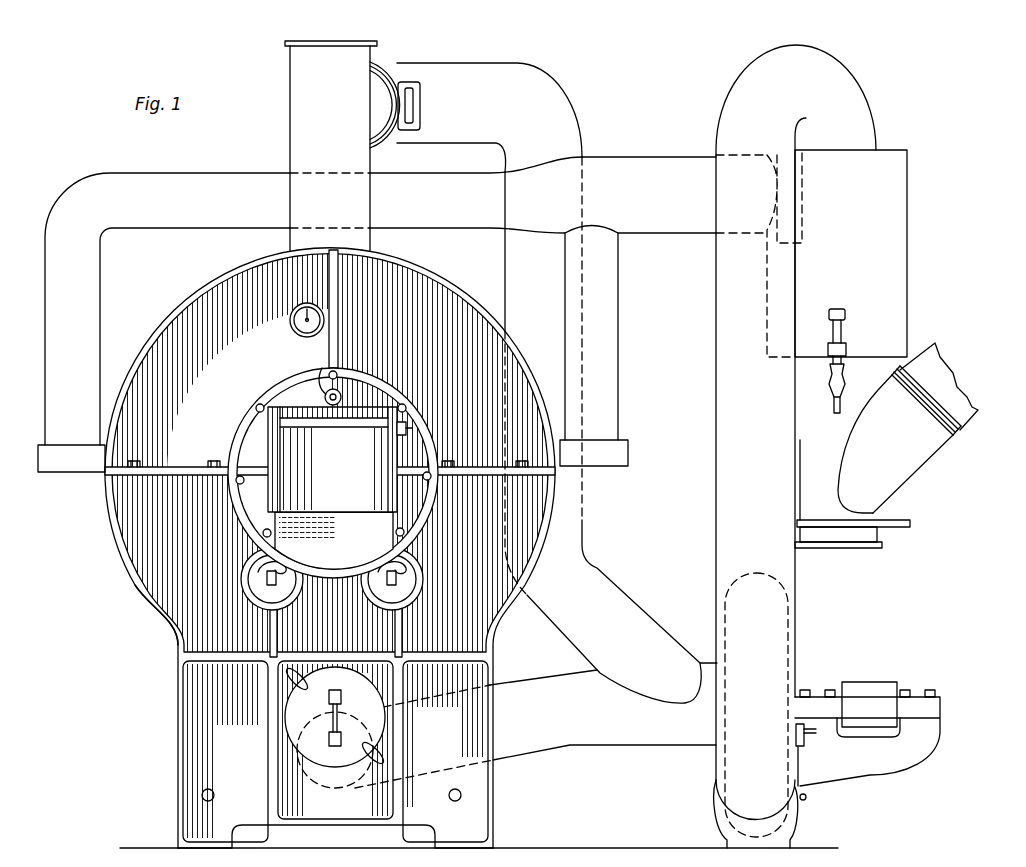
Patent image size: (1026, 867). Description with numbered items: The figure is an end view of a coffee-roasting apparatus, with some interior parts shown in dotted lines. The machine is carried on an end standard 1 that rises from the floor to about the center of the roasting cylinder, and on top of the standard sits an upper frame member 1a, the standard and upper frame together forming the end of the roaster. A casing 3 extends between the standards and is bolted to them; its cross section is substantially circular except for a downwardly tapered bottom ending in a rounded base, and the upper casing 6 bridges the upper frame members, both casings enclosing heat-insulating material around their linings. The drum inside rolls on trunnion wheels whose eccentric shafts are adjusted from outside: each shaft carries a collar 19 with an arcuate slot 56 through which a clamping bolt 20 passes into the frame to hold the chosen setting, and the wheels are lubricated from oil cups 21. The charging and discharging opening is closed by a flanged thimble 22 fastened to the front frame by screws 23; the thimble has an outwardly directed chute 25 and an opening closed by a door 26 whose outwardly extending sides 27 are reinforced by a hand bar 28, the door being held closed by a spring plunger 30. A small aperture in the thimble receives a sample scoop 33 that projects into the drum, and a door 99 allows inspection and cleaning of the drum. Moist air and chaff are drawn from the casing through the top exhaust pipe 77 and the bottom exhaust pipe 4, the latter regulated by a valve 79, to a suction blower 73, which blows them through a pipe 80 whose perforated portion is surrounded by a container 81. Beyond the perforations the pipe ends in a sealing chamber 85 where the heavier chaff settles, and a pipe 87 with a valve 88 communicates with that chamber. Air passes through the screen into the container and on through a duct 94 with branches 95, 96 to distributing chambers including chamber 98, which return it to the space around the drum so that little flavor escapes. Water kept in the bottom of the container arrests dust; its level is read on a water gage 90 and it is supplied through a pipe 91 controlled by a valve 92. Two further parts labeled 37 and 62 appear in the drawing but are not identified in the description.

The end standard 1 is at (184, 737).
The upper frame member 1a is at (330, 472).
The casing 3 is at (158, 606).
The exhaust pipe 4 is at (517, 684).
The casing 6 is at (203, 292).
The collar 19 is at (262, 593).
The clamping bolt 20 is at (262, 560).
The oil cups 21 is at (266, 583).
The flanged thimble 22 is at (241, 447).
The screws 23 is at (256, 406).
The chute 25 is at (334, 540).
The door 26 is at (334, 469).
The sides 27 is at (295, 452).
The hand bar 28 is at (352, 420).
The spring plunger 30 is at (410, 428).
The sample scoop 33 is at (322, 372).
The flange 37 is at (624, 466).
The arcuate slot 56 is at (262, 573).
The gauge 62 is at (290, 321).
The suction blower 73 is at (790, 662).
The exhaust pipe 77 is at (568, 125).
The regulating valve 79 is at (420, 110).
The pipe 80 is at (716, 382).
The container 81 is at (905, 250).
The sealing chamber 85 is at (805, 503).
The pipe 87 is at (945, 380).
The valve 88 is at (962, 430).
The water gage 90 is at (846, 336).
The pipe 91 is at (838, 414).
The valve 92 is at (845, 374).
The duct 94 is at (655, 165).
The branch 95 is at (618, 350).
The branch 96 is at (45, 388).
The distributing chamber 98 is at (58, 470).
The door 99 is at (335, 727).